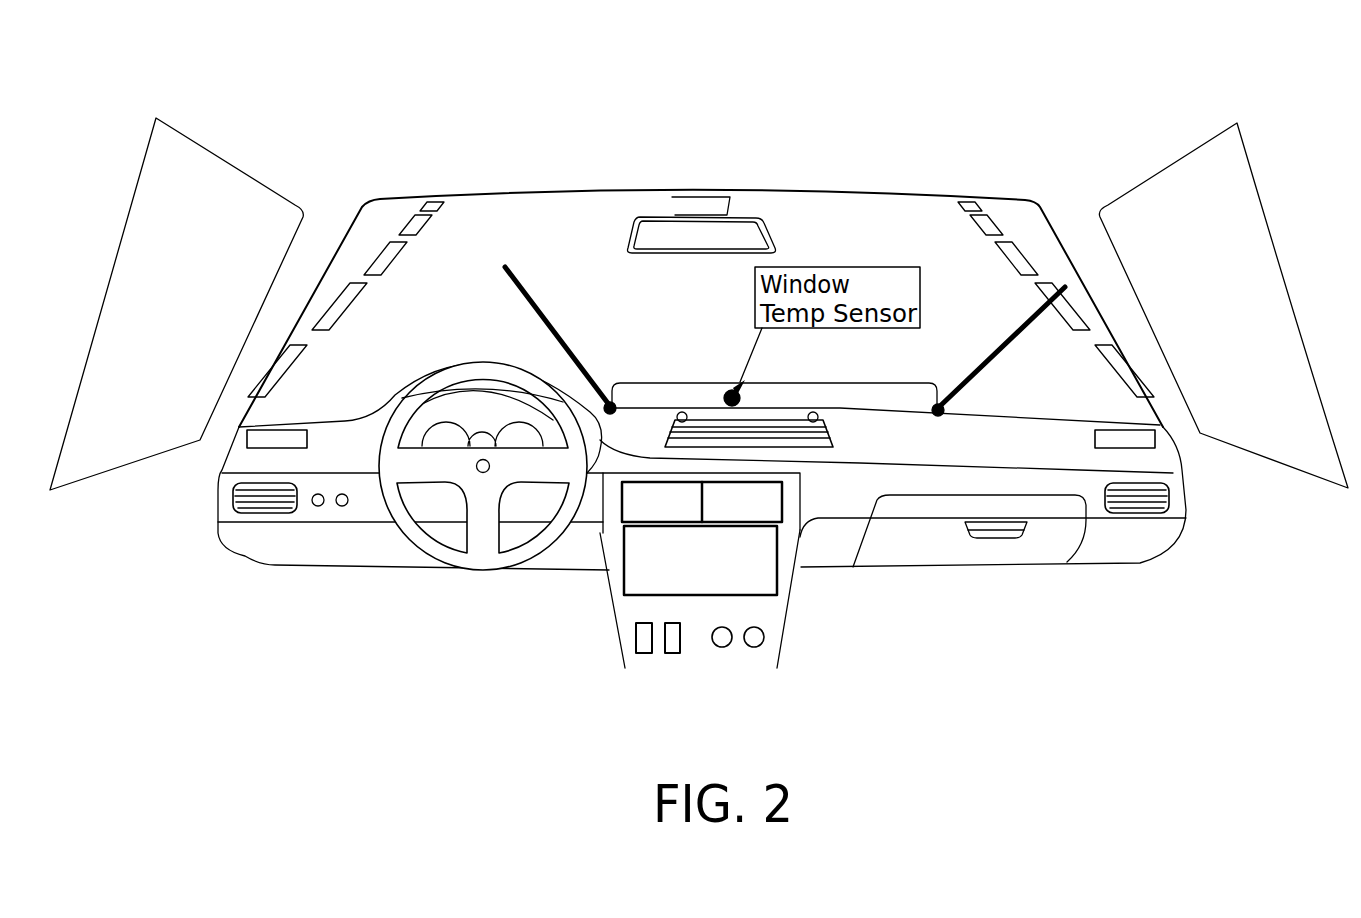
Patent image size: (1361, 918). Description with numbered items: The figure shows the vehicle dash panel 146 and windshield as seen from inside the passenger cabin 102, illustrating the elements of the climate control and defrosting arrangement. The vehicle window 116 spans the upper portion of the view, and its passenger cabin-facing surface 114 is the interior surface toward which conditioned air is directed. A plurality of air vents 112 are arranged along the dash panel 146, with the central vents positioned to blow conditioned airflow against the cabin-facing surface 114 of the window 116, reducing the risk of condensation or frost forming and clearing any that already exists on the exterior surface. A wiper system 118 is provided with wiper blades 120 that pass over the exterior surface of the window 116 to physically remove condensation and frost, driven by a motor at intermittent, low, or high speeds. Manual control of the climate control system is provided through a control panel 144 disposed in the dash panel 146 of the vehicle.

The passenger cabin 102 is at (425, 621).
The air vents 112 is at (247, 441).
The passenger cabin-facing surface 114 is at (826, 216).
The vehicle window 116 is at (553, 185).
The wiper system 118 is at (683, 383).
The wiper blades 120 is at (535, 292).
The control panel 144 is at (780, 568).
The dash panel 146 is at (973, 578).